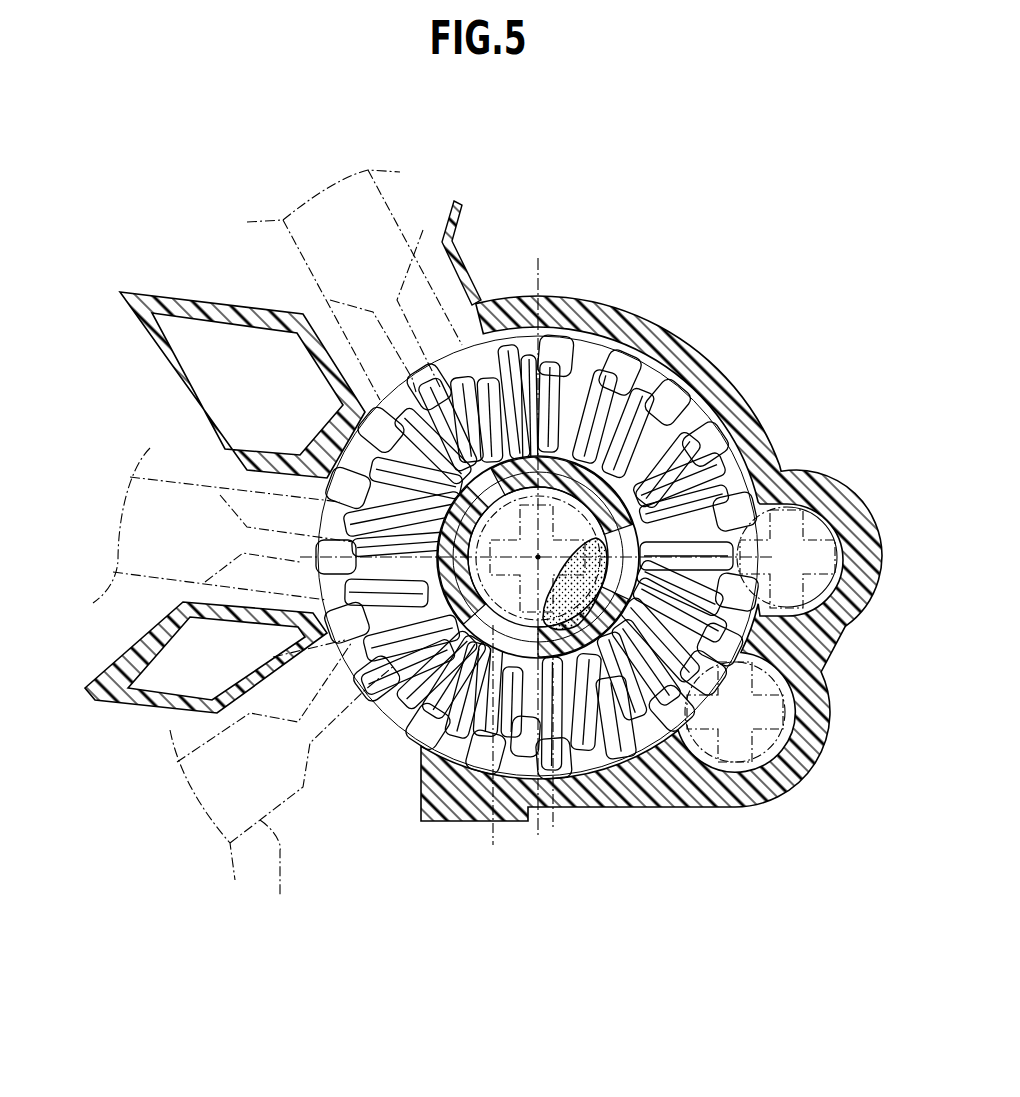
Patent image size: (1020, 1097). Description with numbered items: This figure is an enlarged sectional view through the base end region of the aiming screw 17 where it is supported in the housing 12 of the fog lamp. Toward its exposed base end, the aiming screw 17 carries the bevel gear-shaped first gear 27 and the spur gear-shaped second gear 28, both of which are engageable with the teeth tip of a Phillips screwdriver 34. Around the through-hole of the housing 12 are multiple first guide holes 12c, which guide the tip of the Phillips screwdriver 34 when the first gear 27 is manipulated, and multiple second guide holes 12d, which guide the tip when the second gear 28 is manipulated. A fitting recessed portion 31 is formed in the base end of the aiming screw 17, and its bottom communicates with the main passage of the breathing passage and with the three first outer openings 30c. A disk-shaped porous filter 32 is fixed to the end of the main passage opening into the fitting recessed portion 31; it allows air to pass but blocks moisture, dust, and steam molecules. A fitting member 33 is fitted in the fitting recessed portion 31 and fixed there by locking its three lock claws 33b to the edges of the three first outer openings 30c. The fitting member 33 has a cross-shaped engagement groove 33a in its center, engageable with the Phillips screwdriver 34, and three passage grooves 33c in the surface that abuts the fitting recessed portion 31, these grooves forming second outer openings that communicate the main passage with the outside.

The housing 12 is at (683, 331).
The first guide holes 12c is at (456, 272).
The second guide holes 12d is at (830, 627).
The aiming screw 17 is at (575, 449).
The first gear 27 is at (690, 431).
The second gear 28 is at (678, 403).
The first outer openings 30c is at (490, 485).
The fitting recessed portion 31 is at (587, 640).
The filter 32 is at (537, 546).
The fitting member 33 is at (535, 455).
The cross-shaped engagement groove 33a is at (561, 751).
The lock claws 33b is at (495, 483).
The passage grooves 33c is at (613, 493).
The Phillips screwdriver 34 is at (290, 257).